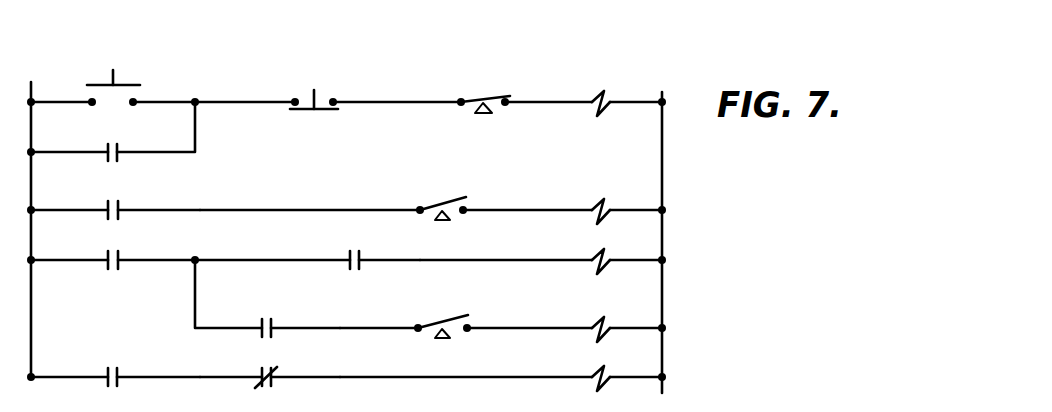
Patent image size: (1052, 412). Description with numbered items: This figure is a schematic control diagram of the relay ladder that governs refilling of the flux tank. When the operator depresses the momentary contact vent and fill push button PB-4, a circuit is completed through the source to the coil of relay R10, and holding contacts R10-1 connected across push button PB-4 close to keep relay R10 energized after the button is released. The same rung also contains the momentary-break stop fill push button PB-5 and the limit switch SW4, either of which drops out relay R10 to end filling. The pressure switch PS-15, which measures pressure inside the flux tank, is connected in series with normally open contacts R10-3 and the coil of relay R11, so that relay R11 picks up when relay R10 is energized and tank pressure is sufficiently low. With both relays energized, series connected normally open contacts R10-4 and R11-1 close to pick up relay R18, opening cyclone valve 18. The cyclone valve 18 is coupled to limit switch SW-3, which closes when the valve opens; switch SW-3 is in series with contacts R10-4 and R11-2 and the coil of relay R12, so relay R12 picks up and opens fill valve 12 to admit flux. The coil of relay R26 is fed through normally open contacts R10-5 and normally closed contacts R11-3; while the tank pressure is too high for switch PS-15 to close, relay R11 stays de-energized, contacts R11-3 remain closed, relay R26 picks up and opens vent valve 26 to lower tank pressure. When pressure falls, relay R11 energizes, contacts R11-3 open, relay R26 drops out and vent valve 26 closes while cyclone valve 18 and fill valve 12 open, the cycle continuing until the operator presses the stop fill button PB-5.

The vent and fill push button PB-4 is at (117, 70).
The stop fill push button switch PB-5 is at (315, 80).
The limit switch SW4 is at (481, 88).
The relay R10 is at (615, 90).
The holding contacts R10-1 is at (113, 131).
The normally open contacts R10-3 is at (115, 195).
The pressure switch PS-15 is at (450, 184).
The relay R11 is at (616, 199).
The normally open contacts R10-4 is at (113, 246).
The normally open contacts R11-1 is at (385, 248).
The relay R18 is at (619, 253).
The cyclone valve 18 is at (762, 262).
The normally open contacts R11-2 is at (301, 314).
The limit switch SW-3 is at (444, 317).
The relay R12 is at (619, 322).
The fill valve 12 is at (789, 335).
The normally open contacts R10-5 is at (115, 361).
The normally closed contacts R11-3 is at (297, 363).
The relay R26 is at (619, 371).
The vent valve 26 is at (799, 385).